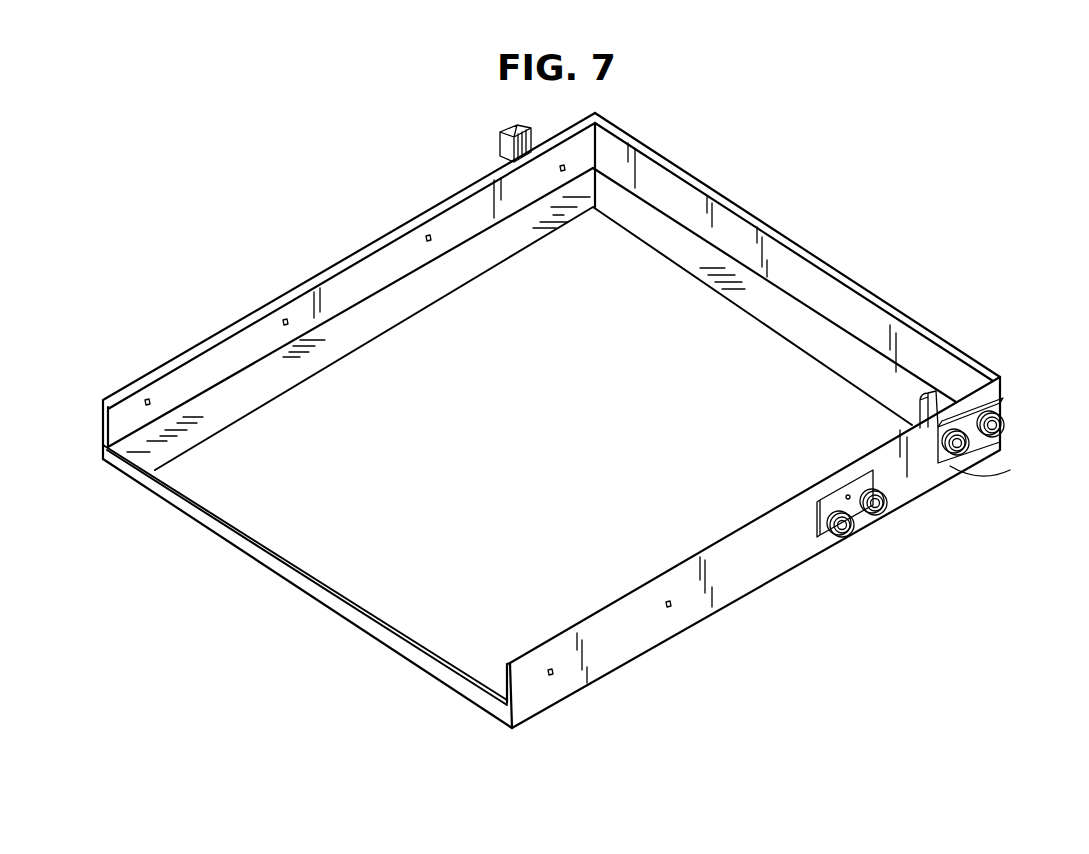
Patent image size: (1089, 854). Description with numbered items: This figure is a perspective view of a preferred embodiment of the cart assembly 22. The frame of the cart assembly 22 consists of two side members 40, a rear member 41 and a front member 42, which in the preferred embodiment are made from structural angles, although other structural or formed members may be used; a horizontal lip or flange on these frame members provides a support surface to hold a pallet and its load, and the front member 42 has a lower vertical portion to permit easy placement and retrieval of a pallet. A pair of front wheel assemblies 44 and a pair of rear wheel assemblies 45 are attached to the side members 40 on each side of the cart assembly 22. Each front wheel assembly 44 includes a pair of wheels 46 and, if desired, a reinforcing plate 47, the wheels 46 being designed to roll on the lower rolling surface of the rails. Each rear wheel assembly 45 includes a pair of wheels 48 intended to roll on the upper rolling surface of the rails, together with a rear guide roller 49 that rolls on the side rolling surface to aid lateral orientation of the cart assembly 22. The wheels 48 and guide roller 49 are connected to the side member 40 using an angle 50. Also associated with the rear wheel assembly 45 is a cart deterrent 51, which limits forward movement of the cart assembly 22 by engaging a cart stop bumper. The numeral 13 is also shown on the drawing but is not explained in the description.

The cart assembly 22 is at (733, 170).
The floor panel 13 is at (410, 632).
The side member 40 is at (297, 300).
The rear member 41 is at (807, 277).
The front member 42 is at (425, 672).
The front wheel assembly 44 is at (850, 541).
The rear wheel assembly 45 is at (662, 305).
The wheels 46 is at (890, 508).
The reinforcing plate 47 is at (857, 483).
The wheels 48 is at (672, 310).
The rear guide roller 49 is at (988, 473).
The angle 50 is at (1000, 434).
The cart deterrent 51 is at (523, 128).